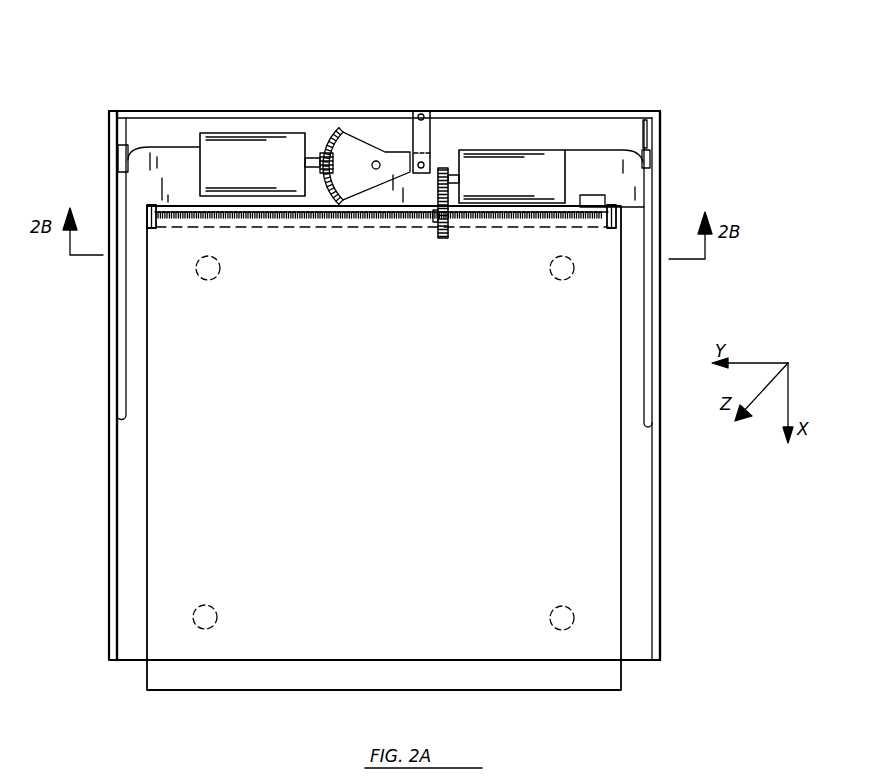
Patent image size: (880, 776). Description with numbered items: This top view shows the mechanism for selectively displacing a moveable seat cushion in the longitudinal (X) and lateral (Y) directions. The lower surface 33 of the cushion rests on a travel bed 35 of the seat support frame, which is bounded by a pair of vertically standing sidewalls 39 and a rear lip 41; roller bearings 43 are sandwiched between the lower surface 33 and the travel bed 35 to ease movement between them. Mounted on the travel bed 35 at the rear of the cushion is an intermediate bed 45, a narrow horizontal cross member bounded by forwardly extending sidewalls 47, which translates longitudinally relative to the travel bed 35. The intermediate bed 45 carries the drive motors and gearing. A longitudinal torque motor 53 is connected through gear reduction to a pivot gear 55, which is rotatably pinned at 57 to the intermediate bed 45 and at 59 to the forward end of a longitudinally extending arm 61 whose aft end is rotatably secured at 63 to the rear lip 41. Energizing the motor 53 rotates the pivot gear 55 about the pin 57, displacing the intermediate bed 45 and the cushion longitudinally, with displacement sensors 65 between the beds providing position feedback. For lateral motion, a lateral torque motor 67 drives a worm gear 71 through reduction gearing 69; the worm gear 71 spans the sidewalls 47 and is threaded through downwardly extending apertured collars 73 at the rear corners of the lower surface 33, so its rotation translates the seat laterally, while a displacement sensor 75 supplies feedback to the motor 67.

The lower surface 33 is at (225, 680).
The travel bed 35 is at (637, 628).
The sidewalls 39 is at (664, 498).
The rear lip 41 is at (222, 110).
The roller bearings 43 is at (217, 276).
The intermediate bed 45 is at (142, 181).
The sidewalls 47 is at (124, 345).
The longitudinal torque motor 53 is at (283, 196).
The pivot gear 55 is at (357, 150).
The pin 57 is at (388, 158).
The pin 59 is at (430, 160).
The longitudinally extending arm 61 is at (425, 128).
The pin 63 is at (421, 114).
The displacement sensors 65 is at (118, 152).
The lateral torque motor 67 is at (543, 153).
The reduction gearing 69 is at (432, 200).
The worm gear 71 is at (485, 220).
The apertured collars 73 is at (151, 229).
The displacement sensor 75 is at (597, 197).